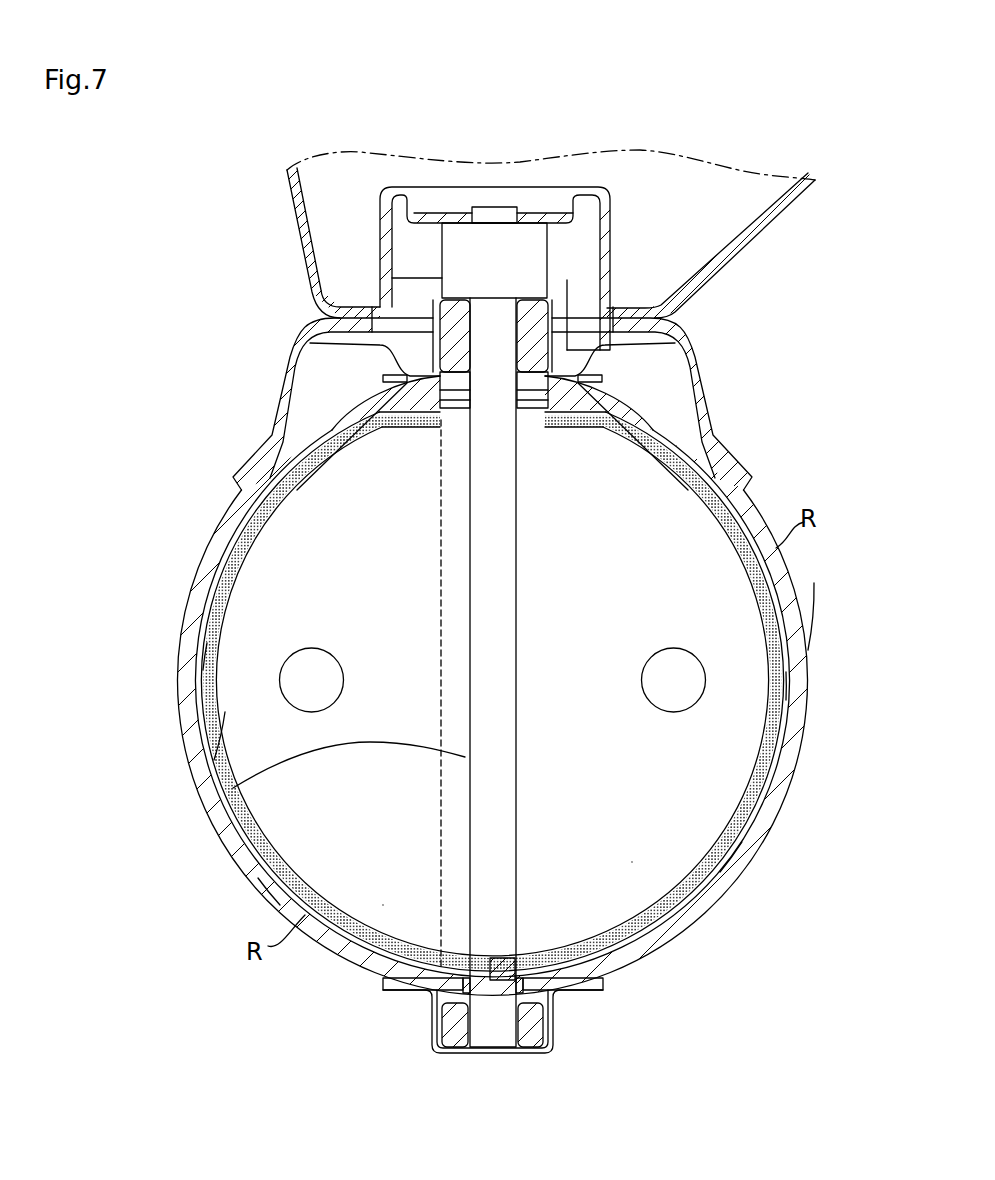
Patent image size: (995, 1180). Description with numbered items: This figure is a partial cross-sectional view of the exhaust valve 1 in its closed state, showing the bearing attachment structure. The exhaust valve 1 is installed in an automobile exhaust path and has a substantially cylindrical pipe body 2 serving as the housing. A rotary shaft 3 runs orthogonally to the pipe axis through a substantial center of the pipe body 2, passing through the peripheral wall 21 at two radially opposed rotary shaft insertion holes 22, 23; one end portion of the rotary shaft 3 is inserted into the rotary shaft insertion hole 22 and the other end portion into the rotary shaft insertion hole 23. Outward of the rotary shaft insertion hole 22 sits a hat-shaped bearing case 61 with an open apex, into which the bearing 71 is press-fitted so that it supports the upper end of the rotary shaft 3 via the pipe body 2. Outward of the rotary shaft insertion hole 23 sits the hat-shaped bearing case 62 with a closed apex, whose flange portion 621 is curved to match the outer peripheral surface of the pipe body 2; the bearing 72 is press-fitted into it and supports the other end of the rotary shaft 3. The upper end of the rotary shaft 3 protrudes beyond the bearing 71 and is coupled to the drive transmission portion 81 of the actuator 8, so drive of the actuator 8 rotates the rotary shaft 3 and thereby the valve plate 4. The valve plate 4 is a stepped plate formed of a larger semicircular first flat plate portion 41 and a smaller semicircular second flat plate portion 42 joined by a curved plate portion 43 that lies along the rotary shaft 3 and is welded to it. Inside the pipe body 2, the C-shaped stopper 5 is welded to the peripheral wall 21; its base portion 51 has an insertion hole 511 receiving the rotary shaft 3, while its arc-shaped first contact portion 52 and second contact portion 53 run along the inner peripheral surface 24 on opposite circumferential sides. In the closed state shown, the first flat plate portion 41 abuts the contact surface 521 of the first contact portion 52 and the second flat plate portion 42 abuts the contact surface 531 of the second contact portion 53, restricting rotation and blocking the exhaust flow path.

The exhaust valve 1 is at (814, 583).
The pipe body 2 is at (798, 775).
The peripheral wall 21 is at (722, 898).
The rotary shaft insertion hole 22 is at (322, 345).
The rotary shaft insertion hole 23 is at (555, 985).
The inner peripheral surface 24 is at (228, 712).
The rotary shaft 3 is at (492, 1040).
The valve plate 4 is at (262, 575).
The first flat plate portion 41 is at (632, 862).
The second flat plate portion 42 is at (383, 905).
The curved plate portion 43 is at (235, 788).
The stopper 5 is at (786, 632).
The base portion 51 is at (573, 393).
The insertion hole 511 is at (440, 400).
The first contact portion 52 is at (786, 702).
The contact surface 521 is at (742, 842).
The second contact portion 53 is at (207, 643).
The contact surface 531 is at (258, 878).
The bearing case 61 is at (607, 360).
The bearing case 62 is at (468, 1050).
The flange portion 621 is at (400, 987).
The bearing 71 is at (437, 300).
The bearing 72 is at (525, 1035).
The actuator 8 is at (763, 228).
The drive transmission portion 81 is at (548, 257).